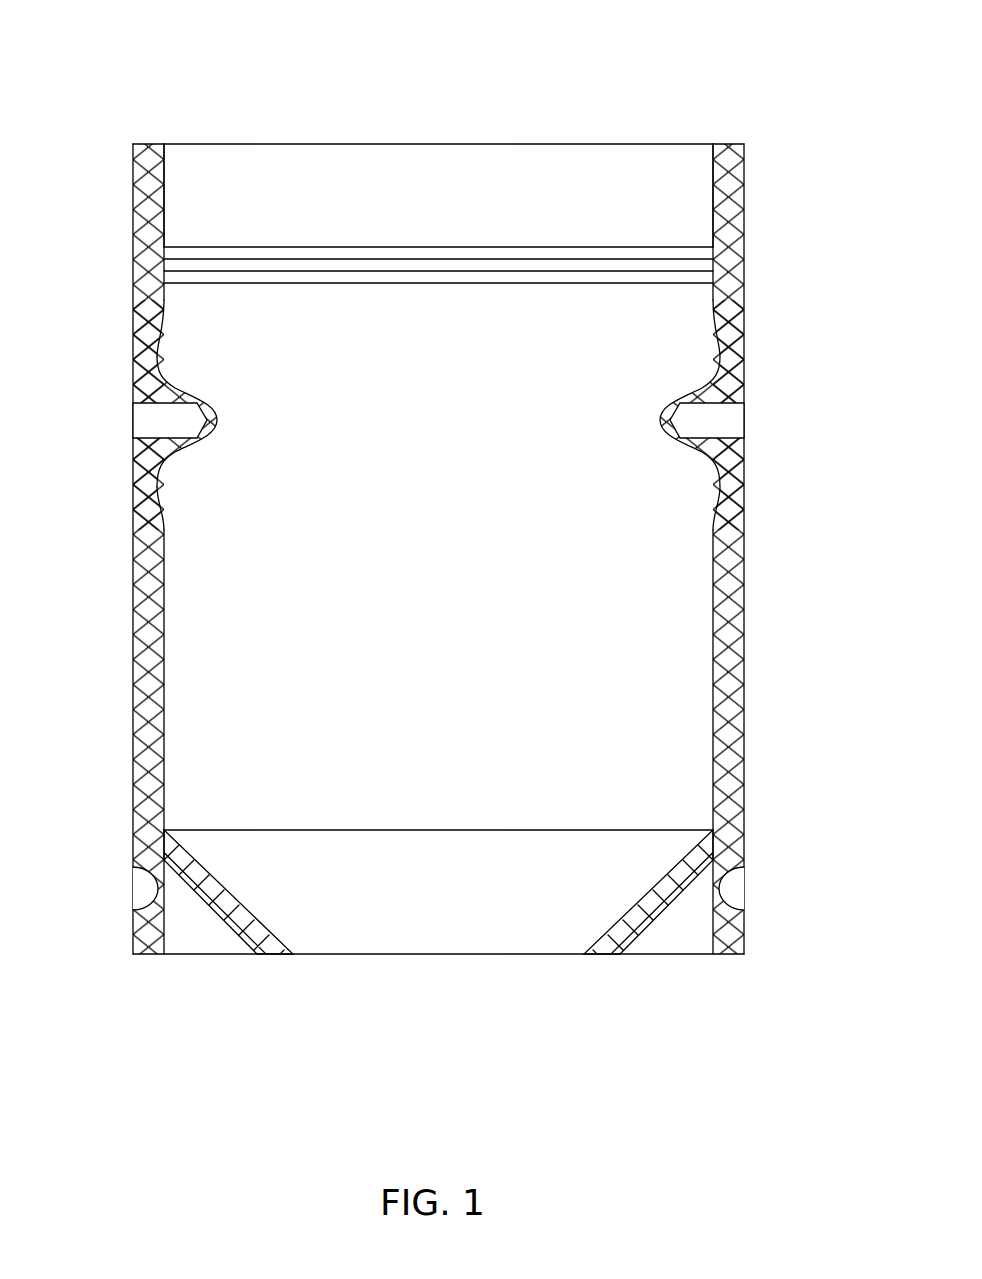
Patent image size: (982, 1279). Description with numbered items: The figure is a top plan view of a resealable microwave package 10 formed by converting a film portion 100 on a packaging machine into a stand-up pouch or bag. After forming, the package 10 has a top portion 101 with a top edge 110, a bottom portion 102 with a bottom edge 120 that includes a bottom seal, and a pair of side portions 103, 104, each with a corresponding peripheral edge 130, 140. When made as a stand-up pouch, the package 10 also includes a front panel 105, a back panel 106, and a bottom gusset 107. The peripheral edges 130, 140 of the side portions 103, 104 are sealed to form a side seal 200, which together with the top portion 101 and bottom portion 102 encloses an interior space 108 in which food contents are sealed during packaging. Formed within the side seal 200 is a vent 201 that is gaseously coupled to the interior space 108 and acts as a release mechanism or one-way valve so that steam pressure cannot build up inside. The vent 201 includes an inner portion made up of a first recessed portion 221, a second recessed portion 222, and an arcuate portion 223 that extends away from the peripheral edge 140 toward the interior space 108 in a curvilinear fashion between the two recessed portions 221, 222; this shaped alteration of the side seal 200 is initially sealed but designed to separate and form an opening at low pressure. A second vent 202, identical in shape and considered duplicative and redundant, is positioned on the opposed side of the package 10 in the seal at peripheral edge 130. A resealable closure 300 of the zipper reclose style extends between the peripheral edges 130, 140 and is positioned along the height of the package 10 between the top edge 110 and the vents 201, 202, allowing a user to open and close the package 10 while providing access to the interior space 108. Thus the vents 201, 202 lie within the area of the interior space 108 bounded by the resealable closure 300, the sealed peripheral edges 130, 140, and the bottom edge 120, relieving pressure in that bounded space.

The package 10 is at (165, 66).
The film portion 100 is at (703, 993).
The top portion 101 is at (243, 170).
The top edge 110 is at (438, 144).
The resealable closure 300 is at (672, 282).
The side portion 104 is at (118, 601).
The peripheral edge 140 is at (133, 697).
The side seal 200 is at (152, 762).
The vent 201 is at (122, 293).
The first recessed portion 221 is at (158, 360).
The second recessed portion 222 is at (158, 487).
The arcuate portion 223 is at (208, 436).
The second vent 202 is at (756, 411).
The peripheral edge 130 is at (745, 543).
The side portion 103 is at (758, 624).
The back panel 106 is at (762, 712).
The interior space 108 is at (668, 758).
The front panel 105 is at (443, 609).
The bottom portion 102 is at (365, 905).
The bottom edge 120 is at (450, 955).
The bottom gusset 107 is at (203, 990).